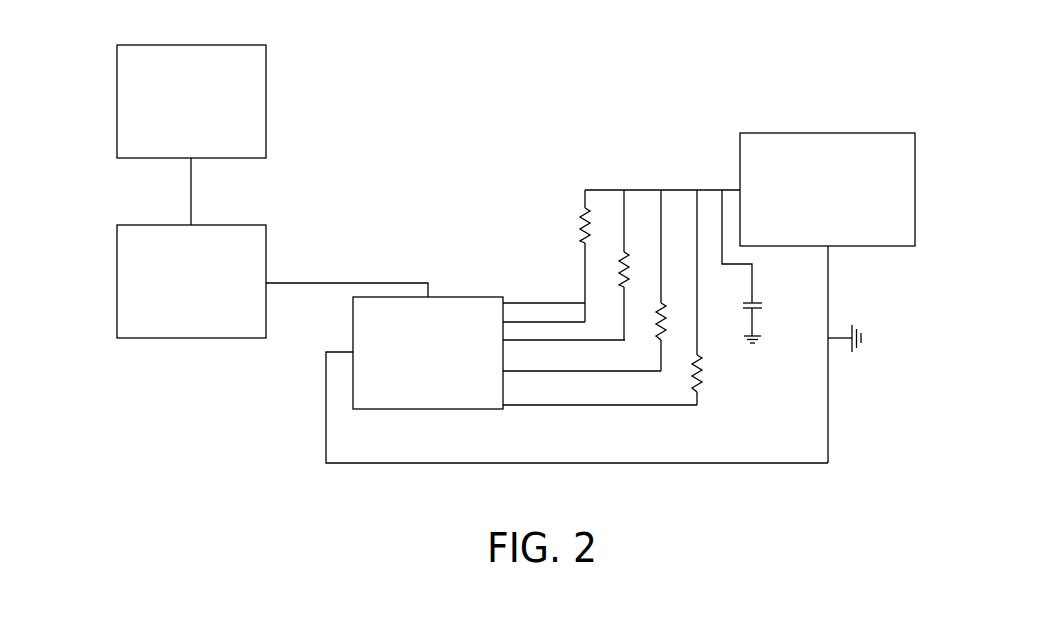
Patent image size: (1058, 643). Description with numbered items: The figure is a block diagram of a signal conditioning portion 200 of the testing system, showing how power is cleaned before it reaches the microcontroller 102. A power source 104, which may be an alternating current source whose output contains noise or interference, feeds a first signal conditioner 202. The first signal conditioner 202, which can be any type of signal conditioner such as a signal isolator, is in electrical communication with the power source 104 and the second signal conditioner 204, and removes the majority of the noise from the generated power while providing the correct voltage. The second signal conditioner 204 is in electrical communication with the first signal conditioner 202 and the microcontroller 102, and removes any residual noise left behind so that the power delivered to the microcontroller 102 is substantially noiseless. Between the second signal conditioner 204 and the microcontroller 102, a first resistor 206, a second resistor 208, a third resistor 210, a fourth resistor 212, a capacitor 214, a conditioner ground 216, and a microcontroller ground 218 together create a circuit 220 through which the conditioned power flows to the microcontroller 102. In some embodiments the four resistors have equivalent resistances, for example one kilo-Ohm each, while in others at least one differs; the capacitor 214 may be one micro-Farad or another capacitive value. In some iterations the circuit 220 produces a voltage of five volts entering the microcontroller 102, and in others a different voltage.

The signal conditioning portion 200 is at (440, 48).
The microcontroller 102 is at (828, 133).
The power source 104 is at (191, 45).
The first signal conditioner 202 is at (117, 282).
The second signal conditioner 204 is at (447, 297).
The first resistor 206 is at (586, 212).
The second resistor 208 is at (627, 252).
The third resistor 210 is at (663, 341).
The fourth resistor 212 is at (700, 391).
The capacitor 214 is at (762, 304).
The conditioner ground 216 is at (758, 342).
The microcontroller ground 218 is at (863, 334).
The circuit 220 is at (735, 497).